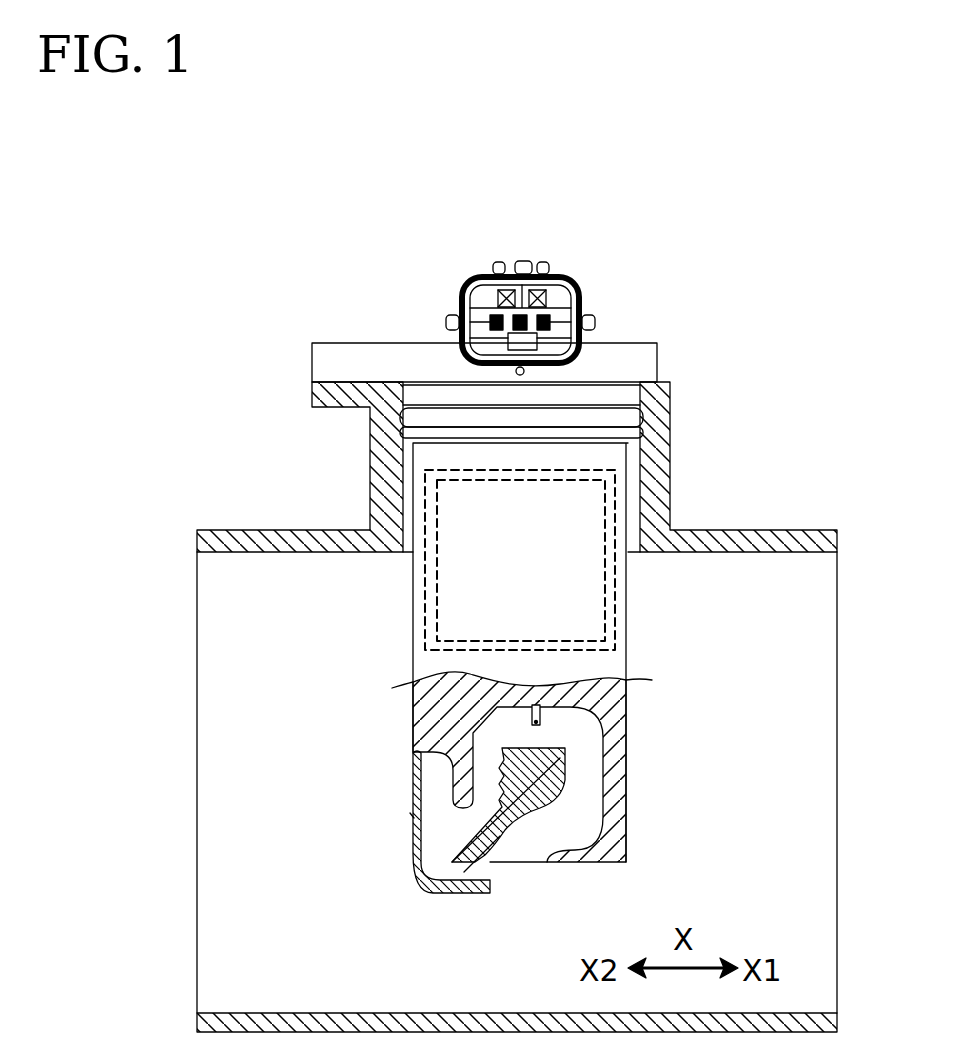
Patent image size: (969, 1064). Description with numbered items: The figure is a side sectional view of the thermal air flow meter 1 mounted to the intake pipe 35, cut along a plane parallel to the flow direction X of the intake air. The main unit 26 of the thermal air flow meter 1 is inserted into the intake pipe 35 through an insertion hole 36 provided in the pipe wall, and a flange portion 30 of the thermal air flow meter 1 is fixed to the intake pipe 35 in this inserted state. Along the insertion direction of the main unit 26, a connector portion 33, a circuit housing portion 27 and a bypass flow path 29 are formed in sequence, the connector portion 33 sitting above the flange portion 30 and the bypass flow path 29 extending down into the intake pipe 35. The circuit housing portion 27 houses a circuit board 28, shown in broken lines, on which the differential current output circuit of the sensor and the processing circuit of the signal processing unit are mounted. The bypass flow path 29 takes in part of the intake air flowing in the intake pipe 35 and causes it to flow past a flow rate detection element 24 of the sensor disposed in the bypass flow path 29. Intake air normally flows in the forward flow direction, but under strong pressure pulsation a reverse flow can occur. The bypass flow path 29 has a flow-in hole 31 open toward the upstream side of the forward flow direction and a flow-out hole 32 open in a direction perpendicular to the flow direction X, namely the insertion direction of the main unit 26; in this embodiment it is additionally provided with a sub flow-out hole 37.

The thermal air flow meter 1 is at (430, 287).
The flow rate detection element 24 is at (545, 722).
The main unit 26 is at (413, 628).
The circuit housing portion 27 is at (613, 648).
The circuit board 28 is at (607, 594).
The bypass flow path 29 is at (583, 790).
The flange portion 30 is at (640, 352).
The flow-in hole 31 is at (410, 778).
The flow-out hole 32 is at (525, 863).
The connector portion 33 is at (576, 283).
The intake pipe 35 is at (732, 530).
The insertion hole 36 is at (403, 567).
The sub flow-out hole 37 is at (497, 880).